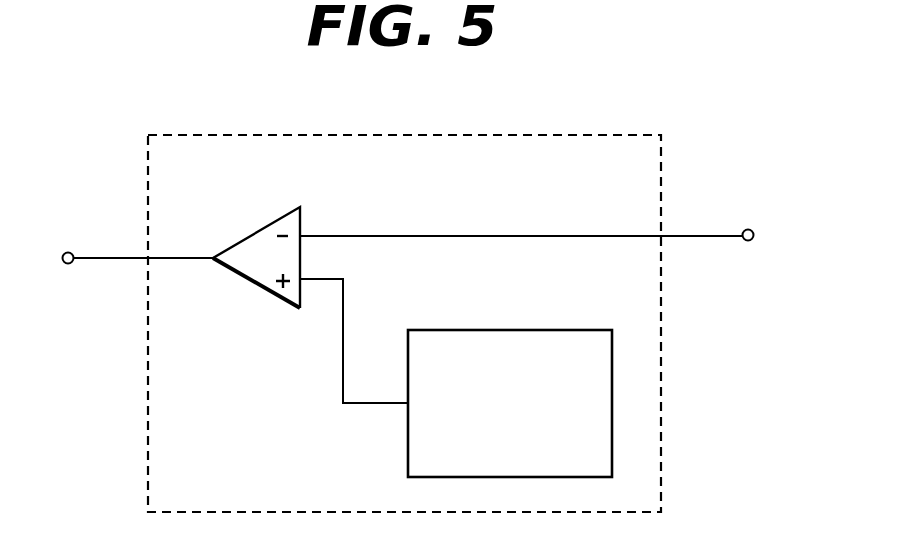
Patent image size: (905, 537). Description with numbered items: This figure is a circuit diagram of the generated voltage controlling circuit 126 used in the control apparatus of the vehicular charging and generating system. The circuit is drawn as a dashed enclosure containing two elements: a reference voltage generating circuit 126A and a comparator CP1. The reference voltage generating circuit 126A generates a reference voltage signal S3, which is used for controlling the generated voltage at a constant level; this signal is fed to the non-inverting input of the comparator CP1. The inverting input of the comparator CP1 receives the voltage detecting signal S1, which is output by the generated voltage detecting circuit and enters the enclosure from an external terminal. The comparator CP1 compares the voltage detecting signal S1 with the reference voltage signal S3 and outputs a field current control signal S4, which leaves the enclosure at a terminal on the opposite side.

The generated voltage controlling circuit 126 is at (662, 430).
The reference voltage generating circuit 126A is at (492, 333).
The comparator CP1 is at (258, 238).
The voltage detecting signal S1 is at (548, 234).
The reference voltage signal S3 is at (340, 365).
The field current control signal S4 is at (114, 258).